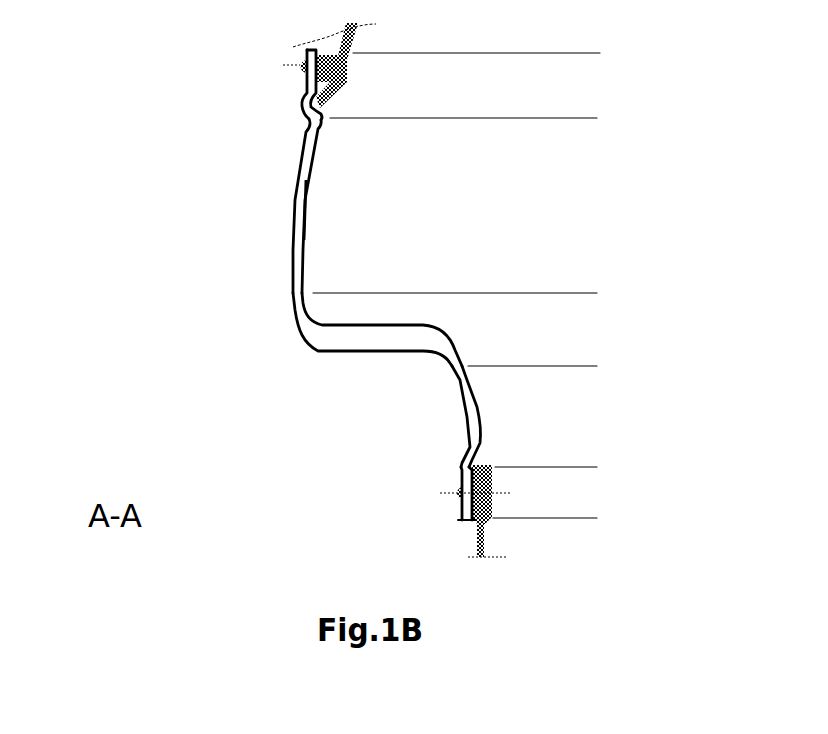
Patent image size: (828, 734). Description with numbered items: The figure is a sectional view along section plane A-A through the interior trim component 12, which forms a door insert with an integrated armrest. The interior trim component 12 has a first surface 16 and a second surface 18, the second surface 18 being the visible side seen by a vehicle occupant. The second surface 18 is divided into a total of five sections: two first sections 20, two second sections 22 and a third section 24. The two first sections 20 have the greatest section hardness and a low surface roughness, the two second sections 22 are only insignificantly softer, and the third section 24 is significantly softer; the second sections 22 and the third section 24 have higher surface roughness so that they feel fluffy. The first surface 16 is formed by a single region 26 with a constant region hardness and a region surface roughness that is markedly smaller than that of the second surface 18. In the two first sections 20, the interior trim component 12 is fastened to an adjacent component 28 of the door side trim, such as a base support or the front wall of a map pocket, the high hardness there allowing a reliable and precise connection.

The interior trim component 12 is at (190, 158).
The first surface 16 is at (380, 285).
The second surface 18 is at (308, 206).
The first section 20 is at (600, 102).
The second section 22 is at (600, 212).
The third section 24 is at (703, 339).
The region 26 is at (293, 238).
The adjacent component 28 is at (353, 60).